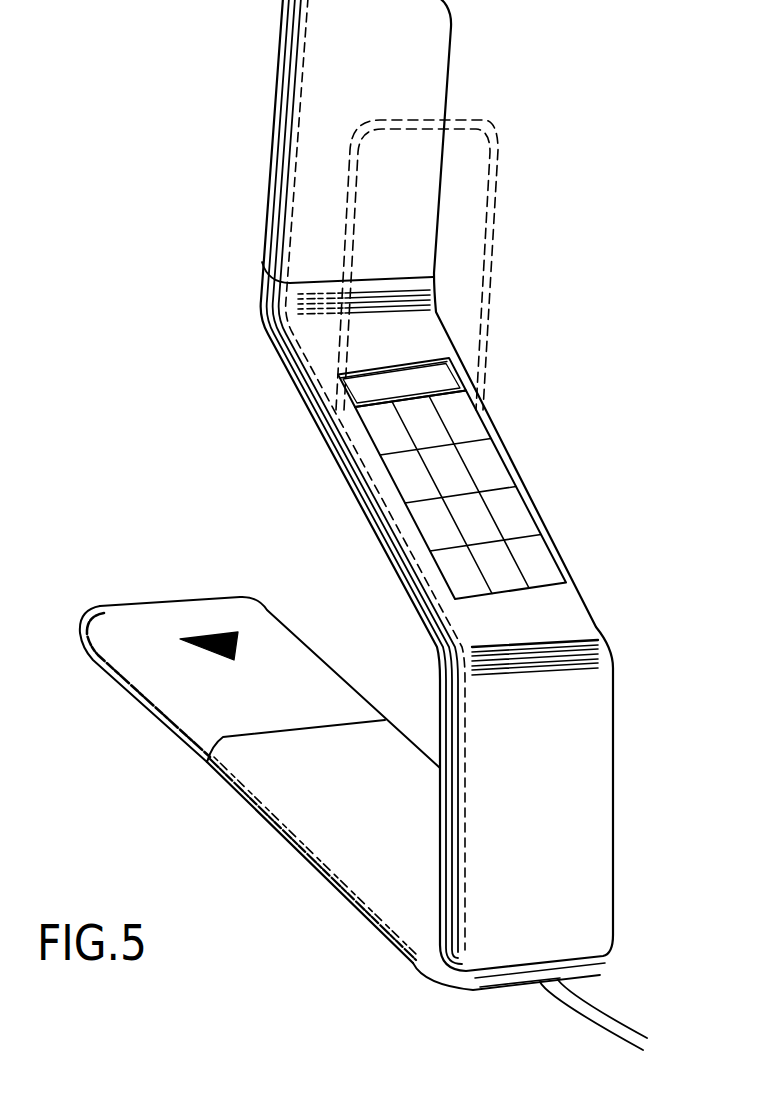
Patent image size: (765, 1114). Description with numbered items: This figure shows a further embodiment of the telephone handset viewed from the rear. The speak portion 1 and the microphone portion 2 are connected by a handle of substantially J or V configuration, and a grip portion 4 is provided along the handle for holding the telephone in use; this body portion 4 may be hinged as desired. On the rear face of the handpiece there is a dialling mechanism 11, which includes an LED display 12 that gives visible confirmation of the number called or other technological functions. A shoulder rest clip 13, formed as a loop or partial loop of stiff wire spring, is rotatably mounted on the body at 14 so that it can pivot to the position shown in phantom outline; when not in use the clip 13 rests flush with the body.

The speak portion 1 is at (268, 133).
The microphone portion 2 is at (207, 630).
The grip portion 4 is at (427, 968).
The dialling mechanism 11 is at (500, 485).
The LED display 12 is at (443, 380).
The shoulder rest clip 13 is at (507, 153).
The rotatable mounting 14 is at (333, 465).